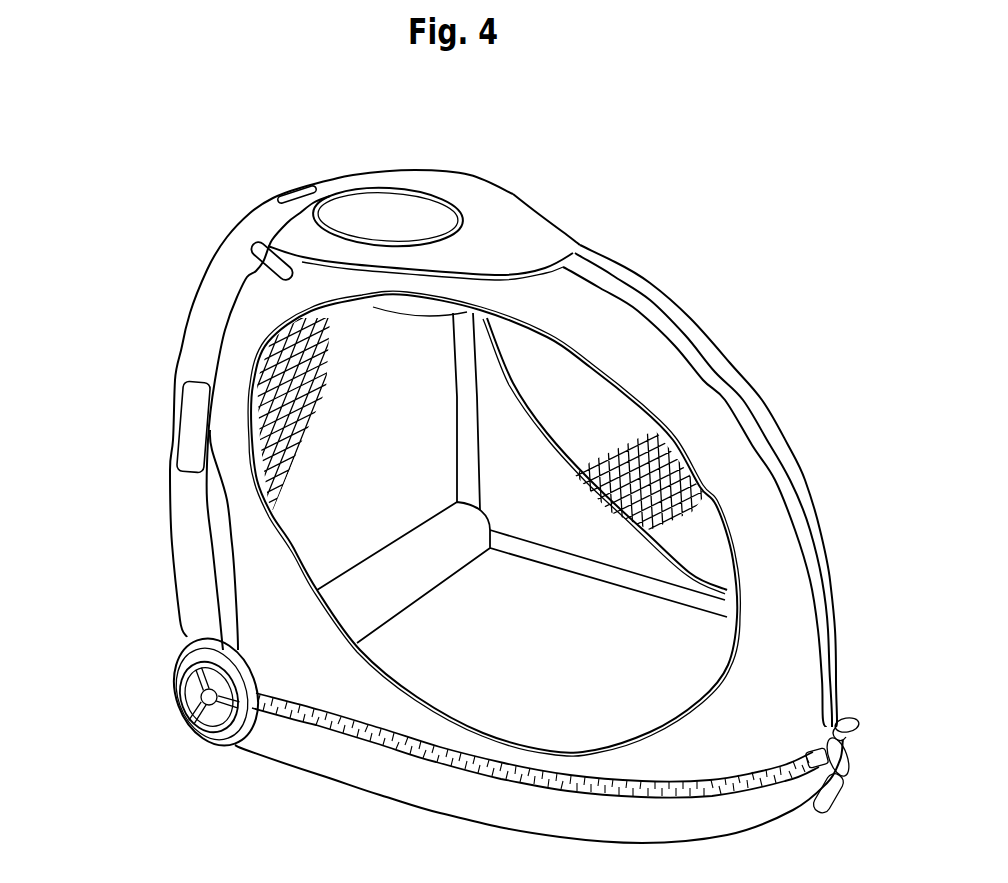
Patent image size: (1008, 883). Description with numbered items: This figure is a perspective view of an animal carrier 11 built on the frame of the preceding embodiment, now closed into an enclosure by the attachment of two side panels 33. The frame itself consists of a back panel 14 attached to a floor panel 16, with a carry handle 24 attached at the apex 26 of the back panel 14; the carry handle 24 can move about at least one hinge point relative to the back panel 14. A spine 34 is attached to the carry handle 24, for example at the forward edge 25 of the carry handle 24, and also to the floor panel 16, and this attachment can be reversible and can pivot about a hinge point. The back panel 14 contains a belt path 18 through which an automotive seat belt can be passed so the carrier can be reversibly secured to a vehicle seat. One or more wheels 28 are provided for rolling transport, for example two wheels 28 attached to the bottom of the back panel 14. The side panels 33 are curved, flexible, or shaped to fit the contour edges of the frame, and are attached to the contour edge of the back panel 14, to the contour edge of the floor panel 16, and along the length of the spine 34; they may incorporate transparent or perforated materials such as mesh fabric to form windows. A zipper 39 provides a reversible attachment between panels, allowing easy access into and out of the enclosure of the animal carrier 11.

The animal carrier 11 is at (146, 198).
The back panel 14 is at (180, 520).
The floor panel 16 is at (485, 814).
The belt path 18 is at (180, 442).
The carry handle 24 is at (448, 189).
The forward edge 25 is at (563, 232).
The apex 26 is at (313, 197).
The wheels 28 is at (180, 708).
The side panels 33 is at (523, 467).
The spine 34 is at (703, 363).
The zipper 39 is at (646, 800).